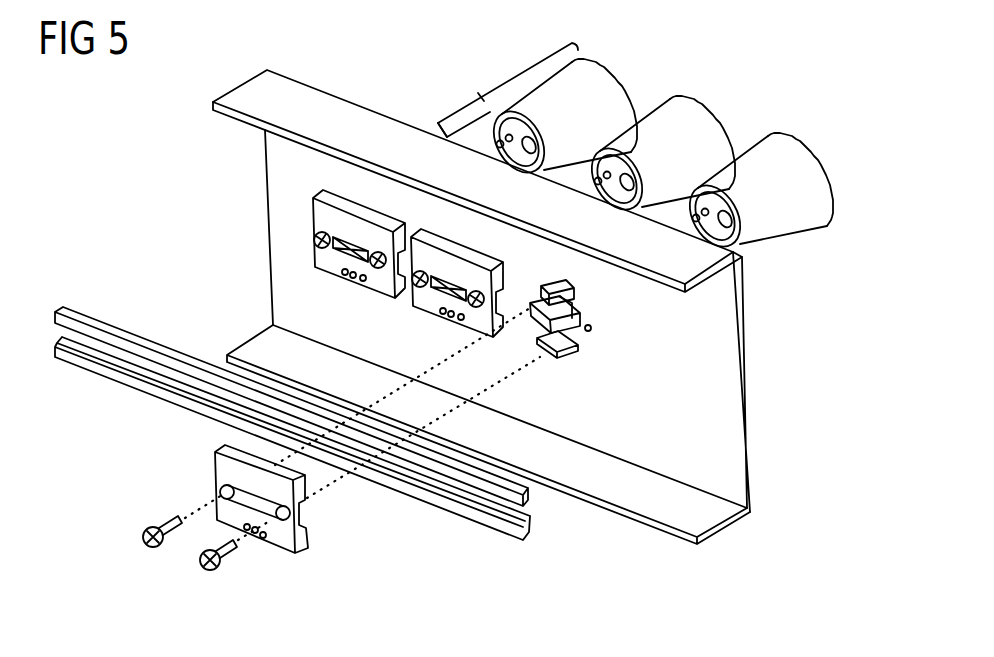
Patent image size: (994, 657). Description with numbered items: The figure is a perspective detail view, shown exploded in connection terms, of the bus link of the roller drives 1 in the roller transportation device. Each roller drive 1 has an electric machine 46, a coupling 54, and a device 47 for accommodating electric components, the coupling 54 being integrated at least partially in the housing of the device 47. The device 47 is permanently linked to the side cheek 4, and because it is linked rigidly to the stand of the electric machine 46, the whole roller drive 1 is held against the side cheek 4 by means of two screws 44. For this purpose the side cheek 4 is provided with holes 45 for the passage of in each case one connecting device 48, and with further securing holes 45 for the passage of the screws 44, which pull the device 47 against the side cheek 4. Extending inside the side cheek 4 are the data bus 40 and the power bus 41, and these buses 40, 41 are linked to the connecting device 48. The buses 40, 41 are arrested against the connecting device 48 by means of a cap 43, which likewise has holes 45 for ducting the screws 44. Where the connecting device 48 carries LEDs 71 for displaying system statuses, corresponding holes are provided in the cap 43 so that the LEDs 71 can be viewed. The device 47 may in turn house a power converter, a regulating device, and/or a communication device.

The roller drive 1 is at (593, 74).
The side cheek 4 is at (347, 117).
The data bus 40 is at (77, 327).
The power bus 41 is at (77, 357).
The cap 43 is at (227, 473).
The screws 44 is at (212, 570).
The holes 45 is at (220, 488).
The electric machine 46 is at (527, 70).
The device for accommodating electric components 47 is at (458, 111).
The connecting device 48 is at (533, 314).
The coupling 54 is at (478, 87).
The LEDs 71 is at (353, 281).